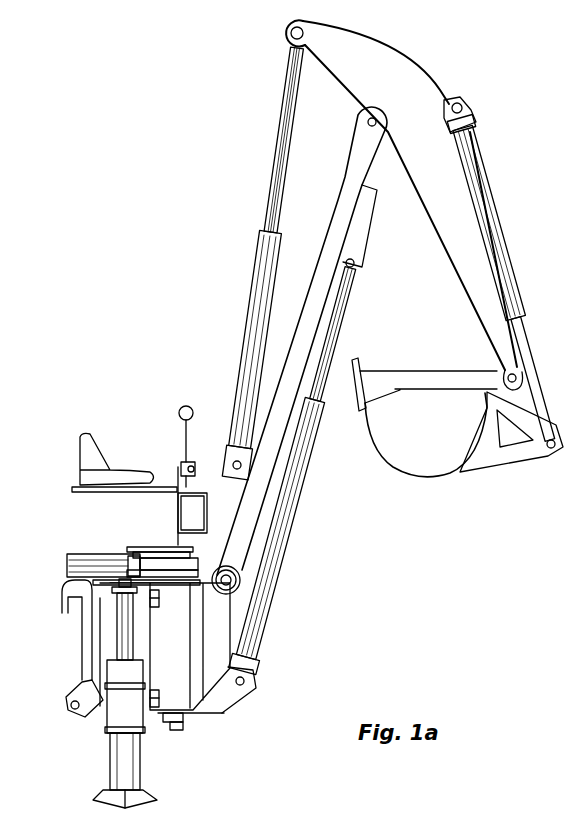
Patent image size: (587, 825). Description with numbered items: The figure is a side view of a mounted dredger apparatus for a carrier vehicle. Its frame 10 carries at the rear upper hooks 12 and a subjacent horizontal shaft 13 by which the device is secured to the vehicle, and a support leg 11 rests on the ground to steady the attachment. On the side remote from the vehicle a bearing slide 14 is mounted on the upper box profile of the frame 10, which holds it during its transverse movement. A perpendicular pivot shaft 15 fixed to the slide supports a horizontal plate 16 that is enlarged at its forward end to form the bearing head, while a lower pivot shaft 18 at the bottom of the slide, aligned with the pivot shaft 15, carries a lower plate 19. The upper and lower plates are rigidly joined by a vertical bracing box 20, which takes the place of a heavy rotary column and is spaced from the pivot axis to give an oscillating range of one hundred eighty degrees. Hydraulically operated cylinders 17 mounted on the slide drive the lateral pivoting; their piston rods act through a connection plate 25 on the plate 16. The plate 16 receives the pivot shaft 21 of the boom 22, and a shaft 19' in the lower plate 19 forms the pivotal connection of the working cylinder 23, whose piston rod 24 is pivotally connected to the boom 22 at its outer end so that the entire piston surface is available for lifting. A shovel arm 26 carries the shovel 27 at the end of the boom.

The frame 10 is at (112, 634).
The support leg 11 is at (128, 778).
The upper hooks 12 is at (63, 600).
The horizontal shaft 13 is at (68, 706).
The bearing slide 14 is at (227, 716).
The pivot shaft 15 is at (175, 568).
The horizontal plate 16 is at (233, 570).
The hydraulic cylinder 17 is at (85, 563).
The lower pivot shaft 18 is at (183, 728).
The lower plate 19 is at (260, 694).
The shaft 19' is at (279, 683).
The bracing box 20 is at (215, 641).
The pivot shaft of the boom 21 is at (238, 587).
The boom 22 is at (293, 365).
The working cylinder 23 is at (297, 513).
The piston rod 24 is at (310, 437).
The plate 25 is at (178, 563).
The shovel arm 26 is at (438, 100).
The shovel 27 is at (447, 447).